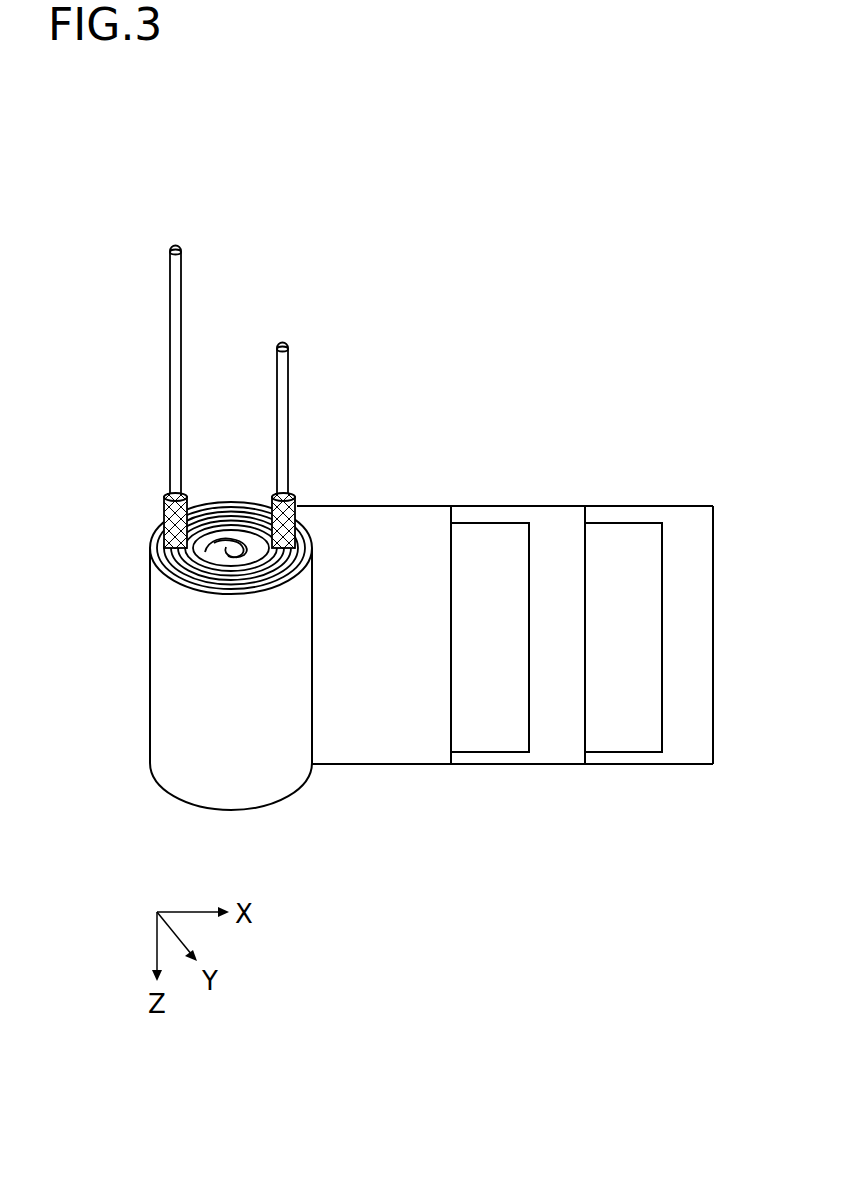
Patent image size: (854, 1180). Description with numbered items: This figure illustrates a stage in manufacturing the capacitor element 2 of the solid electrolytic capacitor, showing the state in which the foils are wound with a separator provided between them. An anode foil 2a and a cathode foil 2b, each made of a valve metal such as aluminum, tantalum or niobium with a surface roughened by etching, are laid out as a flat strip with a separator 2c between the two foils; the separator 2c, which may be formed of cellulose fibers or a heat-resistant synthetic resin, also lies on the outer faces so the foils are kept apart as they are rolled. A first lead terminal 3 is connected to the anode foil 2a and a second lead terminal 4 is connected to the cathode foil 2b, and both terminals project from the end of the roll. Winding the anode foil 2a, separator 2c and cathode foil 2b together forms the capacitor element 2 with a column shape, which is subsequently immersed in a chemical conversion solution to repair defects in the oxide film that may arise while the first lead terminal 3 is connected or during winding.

The capacitor element 2 is at (449, 509).
The anode foil 2a is at (478, 532).
The cathode foil 2b is at (623, 532).
The separator 2c is at (402, 520).
The first lead terminal 3 is at (172, 415).
The second lead terminal 4 is at (280, 415).